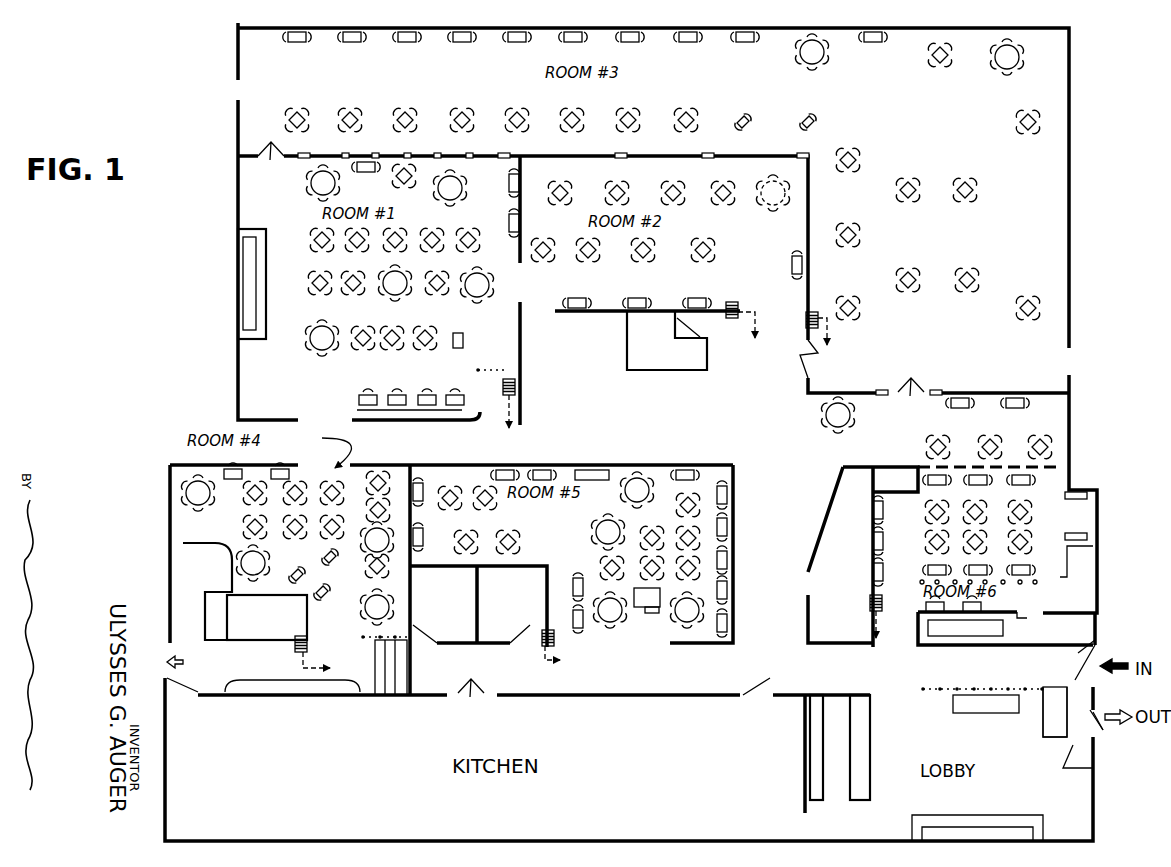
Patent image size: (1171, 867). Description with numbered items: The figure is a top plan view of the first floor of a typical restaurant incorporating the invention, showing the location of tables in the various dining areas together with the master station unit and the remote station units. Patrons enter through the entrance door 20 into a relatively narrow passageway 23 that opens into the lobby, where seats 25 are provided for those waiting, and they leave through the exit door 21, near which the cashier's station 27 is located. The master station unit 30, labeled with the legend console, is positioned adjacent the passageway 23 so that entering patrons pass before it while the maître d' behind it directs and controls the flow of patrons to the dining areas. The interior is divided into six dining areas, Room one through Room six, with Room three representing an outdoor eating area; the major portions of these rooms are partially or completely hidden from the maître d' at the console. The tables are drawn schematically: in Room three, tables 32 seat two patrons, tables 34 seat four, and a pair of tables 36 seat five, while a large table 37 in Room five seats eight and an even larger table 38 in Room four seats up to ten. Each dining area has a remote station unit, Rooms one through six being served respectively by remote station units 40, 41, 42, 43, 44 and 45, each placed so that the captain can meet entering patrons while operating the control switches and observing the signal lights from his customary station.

The entrance door 20 is at (1099, 657).
The exit door 21 is at (1106, 739).
The narrow passageway 23 is at (997, 660).
The seats 25 is at (998, 815).
The cashier's station 27 is at (1040, 732).
The master station unit 30 is at (962, 719).
The tables 32 is at (400, 46).
The tables 34 is at (455, 106).
The tables 36 is at (985, 71).
The table 37 is at (580, 546).
The table 38 is at (346, 595).
The remote station unit 40 is at (518, 385).
The remote station unit 41 is at (736, 299).
The remote station unit 42 is at (820, 309).
The remote station unit 43 is at (294, 652).
The remote station unit 44 is at (540, 648).
The remote station unit 45 is at (881, 595).